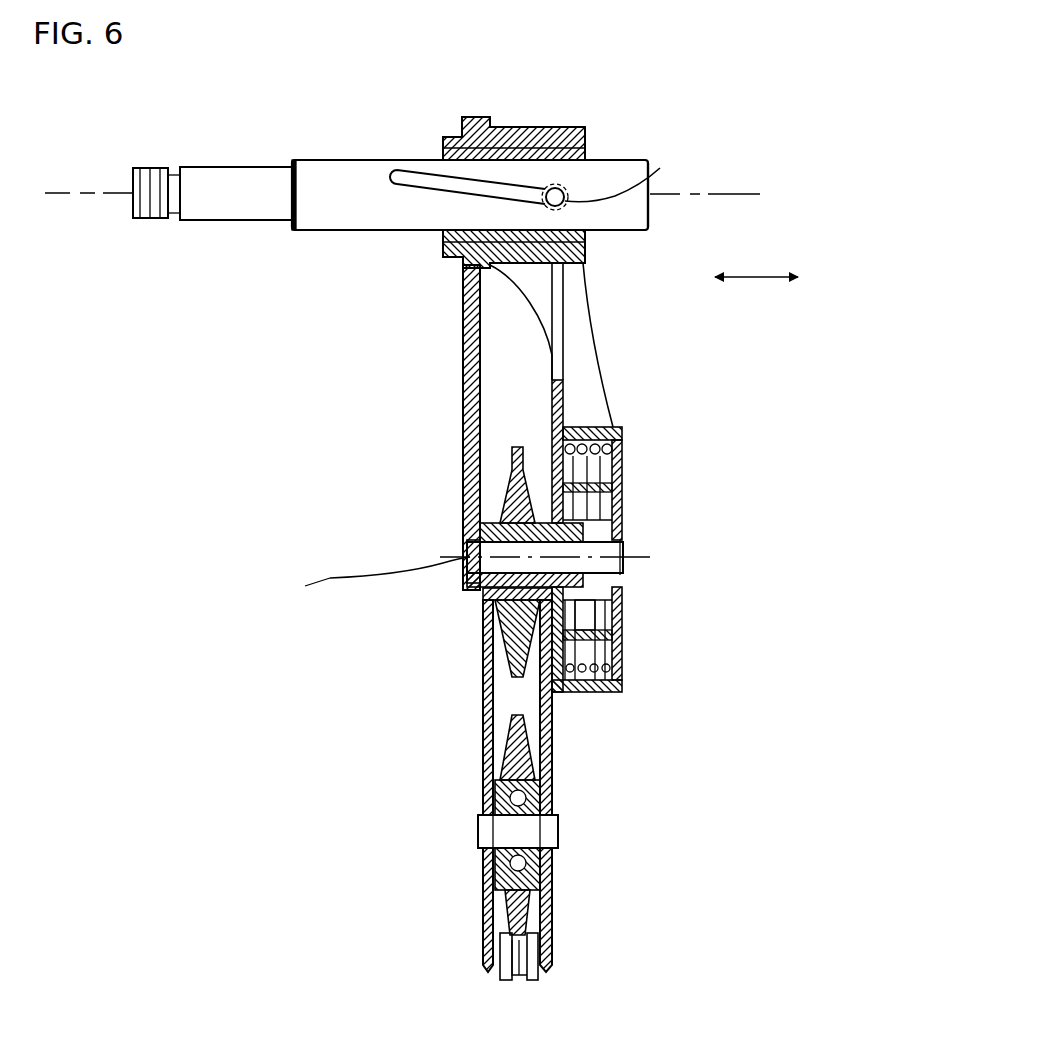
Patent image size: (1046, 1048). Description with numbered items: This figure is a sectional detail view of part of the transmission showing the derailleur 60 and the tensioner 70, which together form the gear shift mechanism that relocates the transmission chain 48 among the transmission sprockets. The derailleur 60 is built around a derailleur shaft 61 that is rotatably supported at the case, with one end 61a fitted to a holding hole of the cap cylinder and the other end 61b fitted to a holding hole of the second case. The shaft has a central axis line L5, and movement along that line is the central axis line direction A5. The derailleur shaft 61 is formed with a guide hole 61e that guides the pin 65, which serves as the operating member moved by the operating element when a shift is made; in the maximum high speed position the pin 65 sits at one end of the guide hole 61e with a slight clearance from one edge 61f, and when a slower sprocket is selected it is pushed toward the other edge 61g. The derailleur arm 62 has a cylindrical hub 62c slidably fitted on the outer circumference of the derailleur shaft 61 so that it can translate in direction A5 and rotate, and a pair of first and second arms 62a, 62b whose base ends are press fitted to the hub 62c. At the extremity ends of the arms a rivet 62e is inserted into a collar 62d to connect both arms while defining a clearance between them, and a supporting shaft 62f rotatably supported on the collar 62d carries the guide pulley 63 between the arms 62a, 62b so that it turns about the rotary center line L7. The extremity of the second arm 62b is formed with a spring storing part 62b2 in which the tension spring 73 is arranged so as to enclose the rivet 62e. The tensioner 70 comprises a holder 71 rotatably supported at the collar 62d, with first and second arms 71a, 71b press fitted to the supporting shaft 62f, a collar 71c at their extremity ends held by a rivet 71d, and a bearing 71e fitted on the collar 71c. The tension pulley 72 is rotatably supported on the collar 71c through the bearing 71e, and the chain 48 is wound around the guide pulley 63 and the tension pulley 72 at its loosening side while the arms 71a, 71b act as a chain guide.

The derailleur 60 is at (720, 98).
The derailleur shaft 61 is at (318, 166).
The one end of the derailleur shaft 61a is at (220, 166).
The other end of the derailleur shaft 61b is at (625, 222).
The guide hole 61e is at (466, 194).
The one edge of the guide hole 61f is at (660, 168).
The other edge of the guide hole 61g is at (395, 174).
The derailleur arm 62 is at (438, 445).
The first arm 62a is at (463, 348).
The second arm 62b is at (565, 392).
The spring storing part 62b2 is at (598, 694).
The cylindrical hub 62c is at (582, 128).
The collar 62d is at (467, 585).
The rivet 62e is at (623, 557).
The supporting shaft 62f is at (470, 556).
The guide pulley 63 is at (500, 488).
The pin 65 is at (568, 188).
The tensioner 70 is at (430, 823).
The holder 71 is at (470, 713).
The first arm of the holder 71a is at (483, 745).
The second arm of the holder 71b is at (553, 750).
The collar 71c is at (560, 832).
The rivet 71d is at (483, 835).
The bearing 71e is at (560, 888).
The tension pulley 72 is at (505, 905).
The tension spring 73 is at (623, 652).
The transmission chain 48 is at (538, 975).
The central axis line L5 is at (742, 194).
The rotary center line L7 is at (367, 586).
The central axis line direction A5 is at (755, 277).